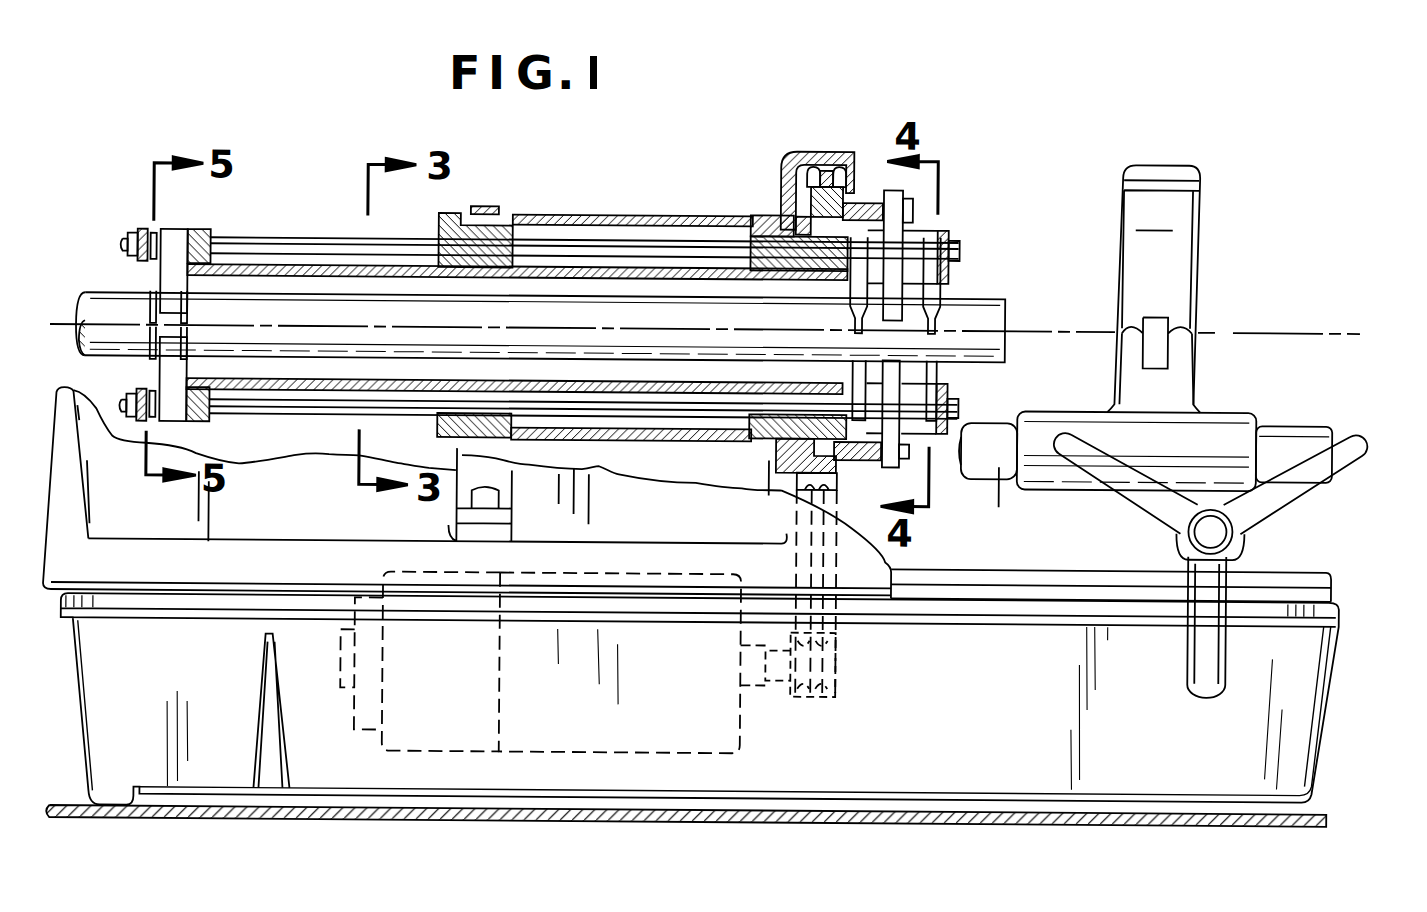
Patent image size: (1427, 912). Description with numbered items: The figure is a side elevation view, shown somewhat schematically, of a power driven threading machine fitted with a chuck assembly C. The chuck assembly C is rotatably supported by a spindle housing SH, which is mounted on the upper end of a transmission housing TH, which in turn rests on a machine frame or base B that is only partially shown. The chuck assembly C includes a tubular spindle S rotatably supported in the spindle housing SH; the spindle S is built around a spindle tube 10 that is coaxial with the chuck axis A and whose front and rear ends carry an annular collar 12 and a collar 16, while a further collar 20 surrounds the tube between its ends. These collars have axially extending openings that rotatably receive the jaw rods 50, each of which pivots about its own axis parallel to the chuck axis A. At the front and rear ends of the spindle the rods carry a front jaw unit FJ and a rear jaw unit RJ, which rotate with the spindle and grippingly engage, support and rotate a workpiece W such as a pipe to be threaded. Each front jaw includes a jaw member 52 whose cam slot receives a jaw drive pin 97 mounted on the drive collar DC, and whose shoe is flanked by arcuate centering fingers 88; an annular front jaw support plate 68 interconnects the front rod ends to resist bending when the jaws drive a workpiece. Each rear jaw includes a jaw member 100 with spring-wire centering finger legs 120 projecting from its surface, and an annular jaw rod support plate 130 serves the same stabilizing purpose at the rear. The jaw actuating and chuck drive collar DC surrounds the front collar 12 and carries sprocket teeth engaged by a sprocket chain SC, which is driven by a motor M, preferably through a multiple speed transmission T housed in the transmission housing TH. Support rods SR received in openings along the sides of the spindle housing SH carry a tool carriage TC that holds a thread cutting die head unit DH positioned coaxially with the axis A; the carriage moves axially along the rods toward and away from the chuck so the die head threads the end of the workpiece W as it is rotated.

The rear jaw unit RJ is at (120, 214).
The annular jaw rod support plate 130 is at (140, 262).
The second leg portions 120 is at (152, 300).
The rear jaw member 100 is at (170, 238).
The collar 16 is at (198, 232).
The jaw rod 50 is at (303, 243).
The tubular spindle S is at (338, 228).
The spindle tube 10 is at (340, 388).
The collar 20 is at (518, 234).
The spindle housing SH is at (666, 198).
The annular collar 12 is at (778, 240).
The jaw actuating and chuck drive collar DC is at (805, 155).
The jaw drive pin 97 is at (866, 197).
The jaw member 52 is at (900, 222).
The annular front jaw support plate 68 is at (903, 393).
The arcuate centering fingers 88 is at (935, 300).
The front jaw unit FJ is at (990, 247).
The chuck assembly C is at (975, 186).
The workpiece W is at (377, 285).
The chuck axis A is at (1241, 316).
The sprocket chain SC is at (855, 637).
The thread cutting die head unit DH is at (1215, 228).
The tool carriage TC is at (1217, 390).
The support rods SR is at (1302, 398).
The transmission housing TH is at (1342, 686).
The machine frame or base B is at (245, 823).
The motor M is at (450, 757).
The multiple speed transmission T is at (573, 762).